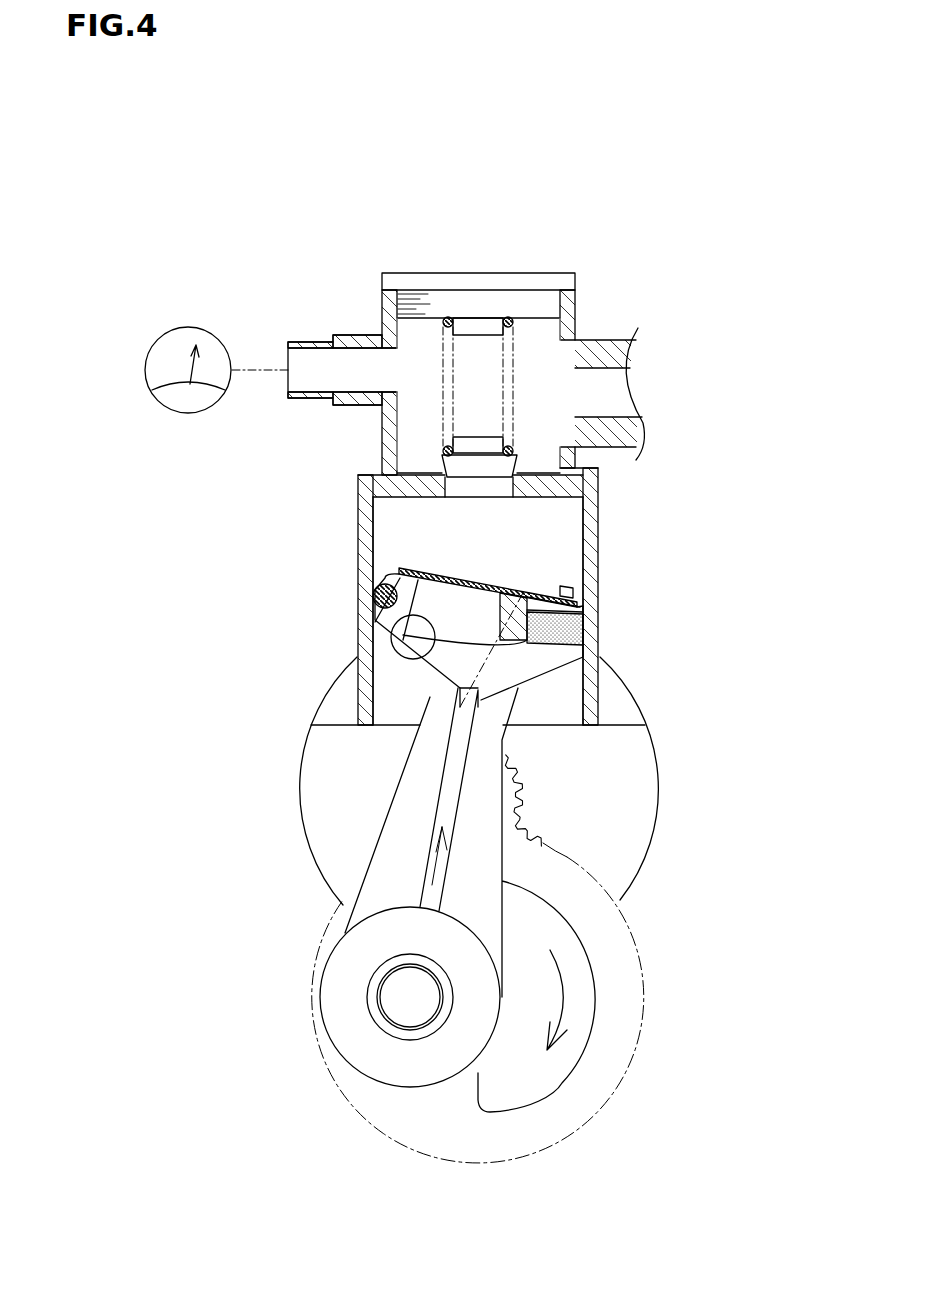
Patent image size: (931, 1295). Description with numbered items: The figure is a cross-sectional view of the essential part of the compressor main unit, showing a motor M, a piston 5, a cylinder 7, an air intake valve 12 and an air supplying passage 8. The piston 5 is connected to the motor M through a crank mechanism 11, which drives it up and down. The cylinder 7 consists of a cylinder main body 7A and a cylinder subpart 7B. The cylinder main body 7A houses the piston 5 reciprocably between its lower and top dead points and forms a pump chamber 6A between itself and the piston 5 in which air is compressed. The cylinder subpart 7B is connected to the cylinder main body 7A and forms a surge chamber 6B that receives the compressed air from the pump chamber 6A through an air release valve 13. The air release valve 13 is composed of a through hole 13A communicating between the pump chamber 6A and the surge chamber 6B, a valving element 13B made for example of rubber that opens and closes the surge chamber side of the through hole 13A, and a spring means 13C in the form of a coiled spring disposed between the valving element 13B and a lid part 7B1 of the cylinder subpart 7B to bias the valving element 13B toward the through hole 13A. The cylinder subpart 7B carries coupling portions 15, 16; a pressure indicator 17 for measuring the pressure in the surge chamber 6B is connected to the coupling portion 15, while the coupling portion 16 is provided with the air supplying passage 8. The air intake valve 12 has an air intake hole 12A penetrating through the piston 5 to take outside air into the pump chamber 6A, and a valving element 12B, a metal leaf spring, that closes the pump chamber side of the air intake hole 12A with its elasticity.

The piston 5 is at (605, 697).
The pump chamber 6A is at (536, 544).
The surge chamber 6B is at (537, 410).
The cylinder 7 is at (758, 357).
The cylinder main body 7A is at (600, 547).
The cylinder subpart 7B is at (578, 304).
The lid part 7B1 is at (460, 283).
The air supplying passage 8 is at (602, 376).
The crank mechanism 11 is at (368, 825).
The air intake valve 12 is at (165, 537).
The air intake hole 12A is at (400, 660).
The valving element 12B is at (437, 572).
The air release valve 13 is at (427, 362).
The through hole 13A is at (447, 482).
The valving element 13B is at (463, 463).
The spring means 13C is at (513, 376).
The coupling portion 15 is at (357, 330).
The coupling portion 16 is at (605, 442).
The pressure indicator 17 is at (165, 333).
The motor M is at (315, 862).